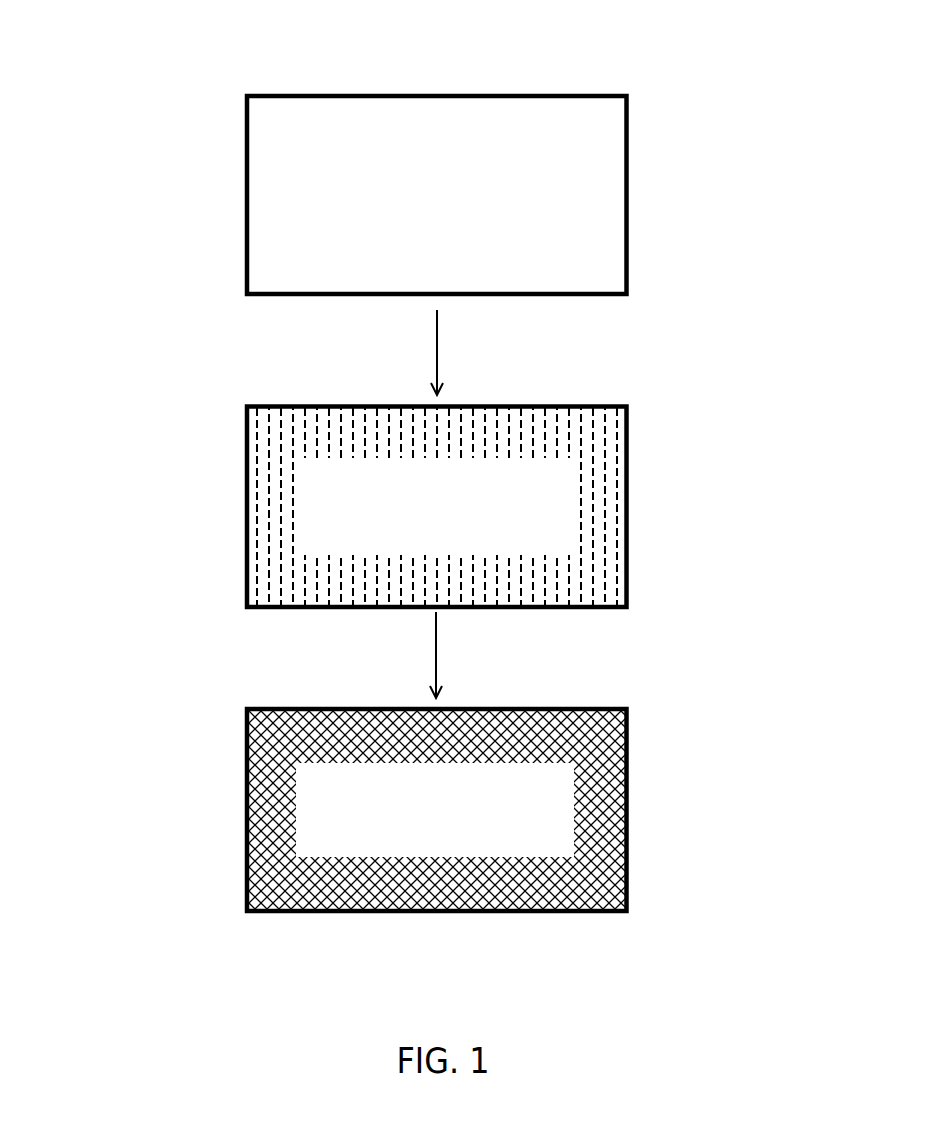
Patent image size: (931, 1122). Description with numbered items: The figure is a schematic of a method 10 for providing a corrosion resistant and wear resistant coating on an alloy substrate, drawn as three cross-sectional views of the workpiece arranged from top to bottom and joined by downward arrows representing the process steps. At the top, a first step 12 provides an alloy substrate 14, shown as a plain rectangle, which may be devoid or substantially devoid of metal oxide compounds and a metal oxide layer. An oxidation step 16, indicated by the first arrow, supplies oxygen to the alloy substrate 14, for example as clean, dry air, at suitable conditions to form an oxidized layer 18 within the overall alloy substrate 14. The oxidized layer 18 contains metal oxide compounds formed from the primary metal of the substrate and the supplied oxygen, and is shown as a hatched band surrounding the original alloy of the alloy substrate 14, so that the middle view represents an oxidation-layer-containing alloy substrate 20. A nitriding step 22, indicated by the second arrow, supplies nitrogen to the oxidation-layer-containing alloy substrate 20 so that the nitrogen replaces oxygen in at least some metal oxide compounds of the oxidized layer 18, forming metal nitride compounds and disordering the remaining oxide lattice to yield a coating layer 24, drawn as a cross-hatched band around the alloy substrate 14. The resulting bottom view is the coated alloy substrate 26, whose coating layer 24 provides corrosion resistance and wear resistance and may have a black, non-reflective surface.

The method 10 is at (152, 85).
The first step 12 is at (554, 74).
The alloy substrate 14 is at (600, 158).
The oxidation step 16 is at (437, 345).
The oxidized layer 18 is at (603, 447).
The oxidation-layer-containing alloy substrate 20 is at (516, 479).
The nitriding step 22 is at (436, 668).
The coating layer 24 is at (602, 735).
The coated alloy substrate 26 is at (523, 769).